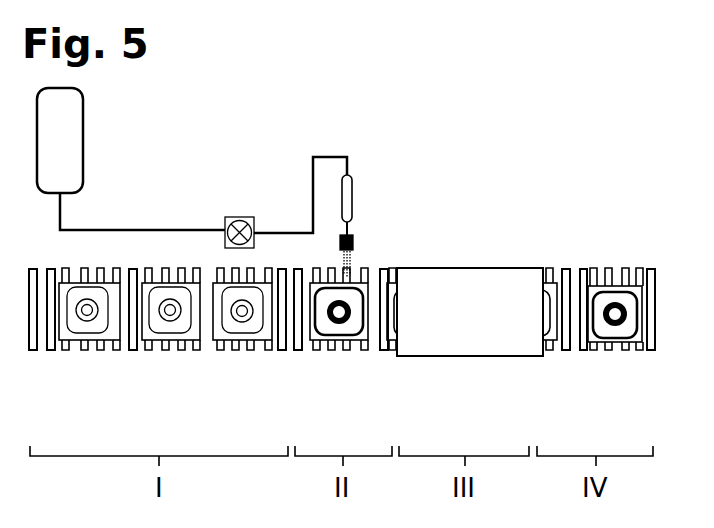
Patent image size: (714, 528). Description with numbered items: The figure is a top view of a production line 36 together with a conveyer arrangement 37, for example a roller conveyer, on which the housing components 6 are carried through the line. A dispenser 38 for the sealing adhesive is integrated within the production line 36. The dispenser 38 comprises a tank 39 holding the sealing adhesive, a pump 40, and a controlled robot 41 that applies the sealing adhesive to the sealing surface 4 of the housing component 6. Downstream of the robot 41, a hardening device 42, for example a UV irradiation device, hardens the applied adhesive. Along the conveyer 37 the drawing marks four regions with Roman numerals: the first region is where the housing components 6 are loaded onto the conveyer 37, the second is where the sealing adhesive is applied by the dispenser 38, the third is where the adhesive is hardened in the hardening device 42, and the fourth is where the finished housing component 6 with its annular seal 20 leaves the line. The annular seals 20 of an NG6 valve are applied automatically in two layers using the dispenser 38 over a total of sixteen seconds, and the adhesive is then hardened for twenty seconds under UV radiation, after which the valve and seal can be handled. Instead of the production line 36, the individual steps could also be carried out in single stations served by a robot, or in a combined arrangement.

The sealing surface 4 is at (88, 312).
The housing component 6 is at (64, 348).
The annular seal 20 is at (339, 314).
The production line 36 is at (549, 243).
The conveyer arrangement 37 is at (35, 350).
The dispenser 38 is at (237, 153).
The tank 39 is at (83, 135).
The pump 40 is at (229, 218).
The controlled robot 41 is at (353, 257).
The hardening device 42 is at (440, 350).